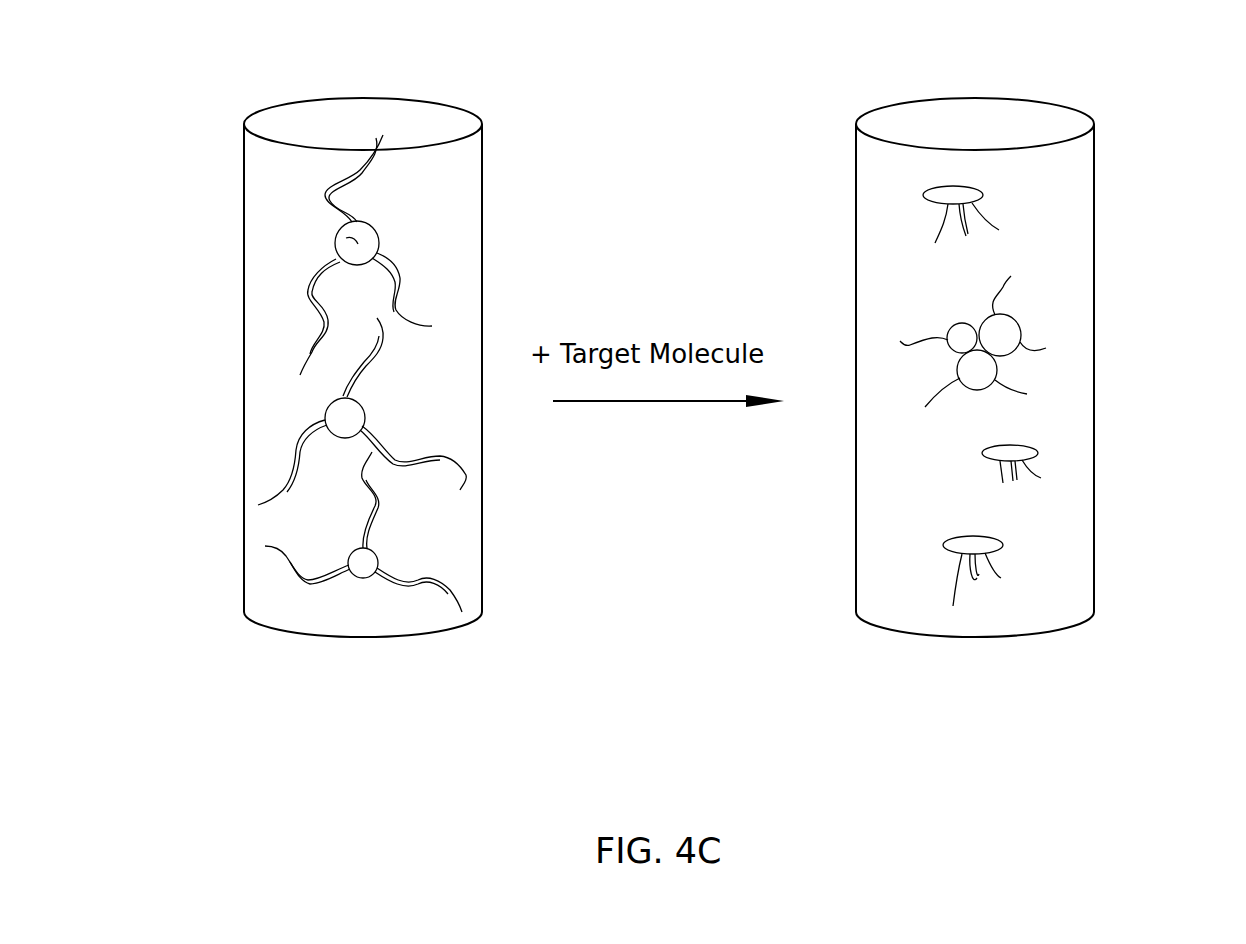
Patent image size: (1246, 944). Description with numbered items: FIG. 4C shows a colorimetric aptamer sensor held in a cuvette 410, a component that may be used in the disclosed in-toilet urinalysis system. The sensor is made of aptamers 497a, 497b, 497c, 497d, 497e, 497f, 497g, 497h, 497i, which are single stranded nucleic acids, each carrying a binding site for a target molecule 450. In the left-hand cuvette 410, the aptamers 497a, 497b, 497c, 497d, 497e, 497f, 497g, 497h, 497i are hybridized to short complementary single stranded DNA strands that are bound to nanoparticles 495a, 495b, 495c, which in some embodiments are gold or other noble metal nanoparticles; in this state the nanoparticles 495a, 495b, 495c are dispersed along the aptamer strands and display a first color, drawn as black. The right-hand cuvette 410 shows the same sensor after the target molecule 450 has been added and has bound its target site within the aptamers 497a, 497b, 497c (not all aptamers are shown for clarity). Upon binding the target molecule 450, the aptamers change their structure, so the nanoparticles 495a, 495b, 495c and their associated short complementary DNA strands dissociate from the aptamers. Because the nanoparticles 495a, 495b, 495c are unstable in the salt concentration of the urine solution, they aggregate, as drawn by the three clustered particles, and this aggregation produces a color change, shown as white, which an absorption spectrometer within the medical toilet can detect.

The cuvette 410 is at (262, 181).
The target molecule 450 is at (978, 192).
The nanoparticle 495a is at (337, 238).
The nanoparticle 495b is at (359, 413).
The nanoparticle 495c is at (360, 578).
The aptamer 497a is at (345, 163).
The aptamer 497b is at (410, 290).
The aptamer 497c is at (300, 290).
The aptamer 497d is at (290, 488).
The aptamer 497e is at (340, 385).
The aptamer 497f is at (430, 465).
The aptamer 497g is at (307, 572).
The aptamer 497h is at (432, 577).
The aptamer 497i is at (385, 520).